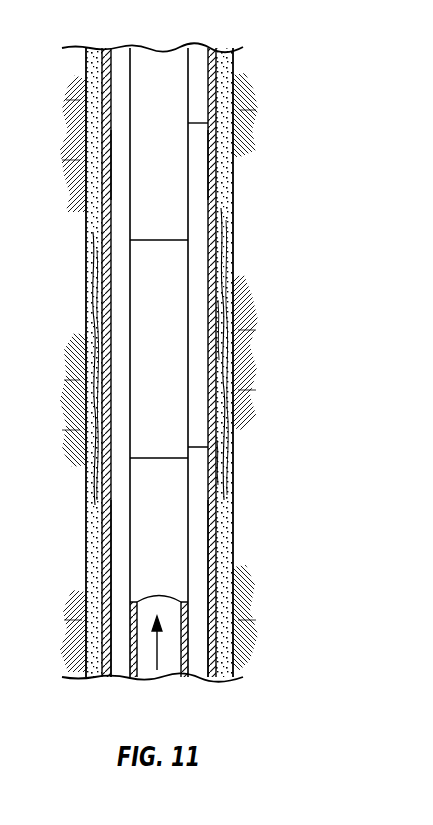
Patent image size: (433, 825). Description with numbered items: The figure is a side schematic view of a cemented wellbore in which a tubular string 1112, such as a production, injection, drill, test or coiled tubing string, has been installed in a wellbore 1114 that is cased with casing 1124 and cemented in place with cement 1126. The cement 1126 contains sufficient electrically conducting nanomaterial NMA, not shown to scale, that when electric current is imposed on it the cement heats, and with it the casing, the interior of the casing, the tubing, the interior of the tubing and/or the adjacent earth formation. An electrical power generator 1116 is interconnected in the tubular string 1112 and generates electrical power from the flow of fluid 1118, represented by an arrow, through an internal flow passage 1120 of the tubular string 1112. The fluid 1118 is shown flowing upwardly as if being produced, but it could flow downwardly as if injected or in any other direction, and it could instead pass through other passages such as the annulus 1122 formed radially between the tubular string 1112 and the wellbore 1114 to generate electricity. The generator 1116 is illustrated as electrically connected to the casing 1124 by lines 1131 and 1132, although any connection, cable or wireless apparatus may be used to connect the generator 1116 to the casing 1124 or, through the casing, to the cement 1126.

The tubular string 1112 is at (210, 123).
The wellbore 1114 is at (212, 147).
The electrical power generator 1116 is at (173, 362).
The fluid flow 1118 is at (157, 653).
The internal flow passage 1120 is at (141, 674).
The annulus 1122 is at (198, 562).
The casing 1124 is at (217, 393).
The cement 1126 is at (228, 478).
The line 1131 is at (188, 248).
The line 1132 is at (188, 447).
The electrically conducting nanomaterial NMA is at (227, 296).